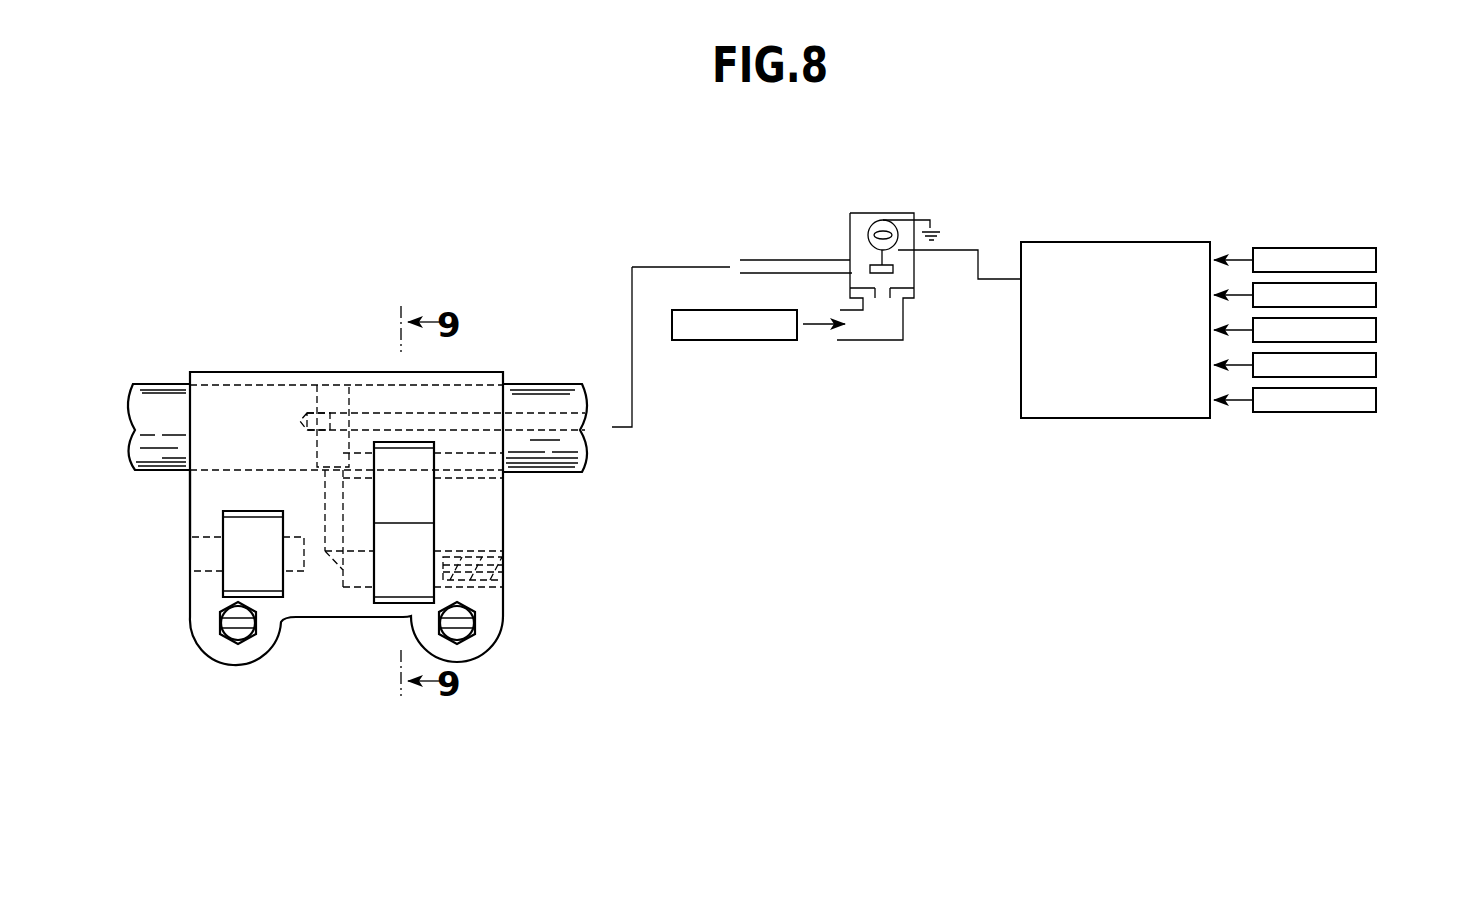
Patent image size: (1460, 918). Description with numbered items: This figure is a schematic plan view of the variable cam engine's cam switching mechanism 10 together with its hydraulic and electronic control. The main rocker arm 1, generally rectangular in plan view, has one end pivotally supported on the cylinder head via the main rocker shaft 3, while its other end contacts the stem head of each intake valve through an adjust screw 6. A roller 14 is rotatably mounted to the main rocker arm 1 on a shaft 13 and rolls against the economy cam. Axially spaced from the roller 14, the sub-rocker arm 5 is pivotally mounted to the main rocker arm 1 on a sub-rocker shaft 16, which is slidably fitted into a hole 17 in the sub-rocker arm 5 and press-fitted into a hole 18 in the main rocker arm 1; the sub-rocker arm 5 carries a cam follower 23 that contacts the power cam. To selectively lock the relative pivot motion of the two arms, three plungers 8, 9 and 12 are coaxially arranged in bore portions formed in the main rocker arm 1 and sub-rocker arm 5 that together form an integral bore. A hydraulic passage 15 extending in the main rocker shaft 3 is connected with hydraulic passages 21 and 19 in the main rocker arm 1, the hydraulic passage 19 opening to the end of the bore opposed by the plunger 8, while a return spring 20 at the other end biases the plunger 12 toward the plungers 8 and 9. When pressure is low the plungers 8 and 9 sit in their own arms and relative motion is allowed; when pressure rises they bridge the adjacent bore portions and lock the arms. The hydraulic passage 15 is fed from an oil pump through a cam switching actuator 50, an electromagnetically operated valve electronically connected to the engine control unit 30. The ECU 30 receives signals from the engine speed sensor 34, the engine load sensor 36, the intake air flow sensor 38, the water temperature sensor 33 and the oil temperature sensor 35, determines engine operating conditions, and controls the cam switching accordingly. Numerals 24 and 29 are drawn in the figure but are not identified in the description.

The main rocker arm 1 is at (186, 489).
The main rocker shaft 3 is at (148, 379).
The sub-rocker arm 5 is at (413, 610).
The adjust screw 6 is at (220, 623).
The plunger 8 is at (355, 590).
The plunger 9 is at (396, 603).
The cam switching mechanism 10 is at (238, 338).
The plunger 12 is at (462, 588).
The shaft 13 is at (213, 538).
The roller 14 is at (223, 527).
The hydraulic passage 15 is at (548, 410).
The sub-rocker shaft 16 is at (478, 480).
The hole 17 is at (417, 450).
The hole 18 is at (473, 447).
The hydraulic passage 19 is at (325, 510).
The return spring 20 is at (482, 577).
The hydraulic passage 21 is at (315, 404).
The cam follower 23 is at (434, 527).
The valve end 24 is at (228, 583).
The valve seat 29 is at (400, 607).
The engine control unit (ECU) 30 is at (1035, 382).
The water temperature sensor 33 is at (1378, 365).
The engine speed sensor 34 is at (1378, 260).
The oil temperature sensor 35 is at (1378, 400).
The engine load sensor 36 is at (1378, 295).
The intake air flow sensor 38 is at (1378, 330).
The cam switching actuator 50 is at (828, 236).